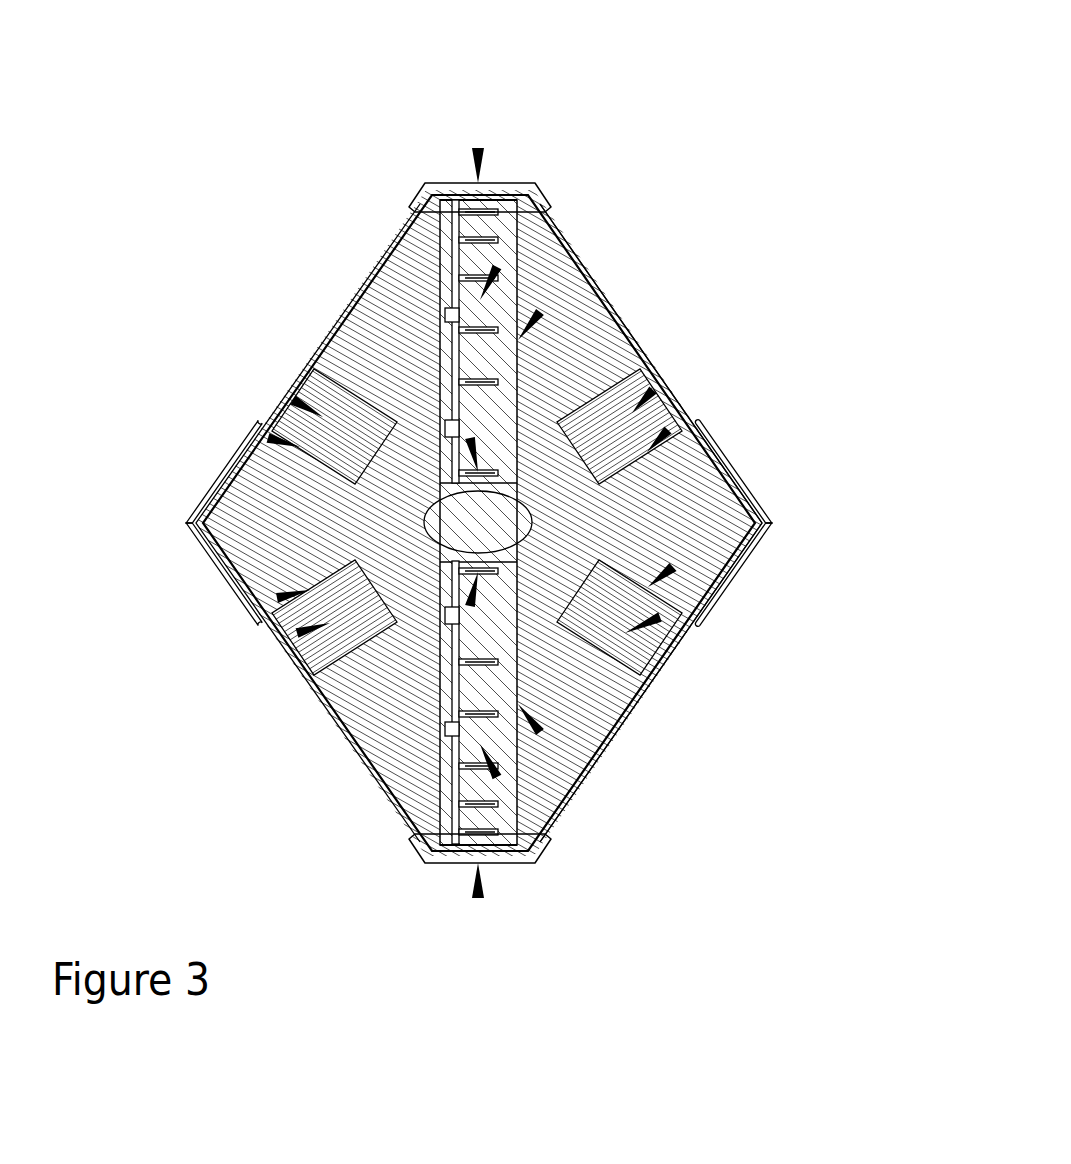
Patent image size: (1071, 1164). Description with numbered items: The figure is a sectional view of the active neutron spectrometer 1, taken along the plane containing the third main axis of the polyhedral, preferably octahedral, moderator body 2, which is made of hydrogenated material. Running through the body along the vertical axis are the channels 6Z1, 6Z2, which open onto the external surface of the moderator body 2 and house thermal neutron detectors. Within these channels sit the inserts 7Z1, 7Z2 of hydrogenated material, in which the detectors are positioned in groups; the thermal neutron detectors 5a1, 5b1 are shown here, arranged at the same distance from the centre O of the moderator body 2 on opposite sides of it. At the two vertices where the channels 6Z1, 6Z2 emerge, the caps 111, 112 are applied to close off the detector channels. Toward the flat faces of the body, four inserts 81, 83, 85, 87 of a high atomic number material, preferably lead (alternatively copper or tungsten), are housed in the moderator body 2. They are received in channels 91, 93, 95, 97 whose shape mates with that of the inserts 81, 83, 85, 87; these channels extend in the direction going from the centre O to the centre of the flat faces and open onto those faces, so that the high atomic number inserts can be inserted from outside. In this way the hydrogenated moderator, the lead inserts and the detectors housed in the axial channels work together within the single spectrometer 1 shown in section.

The active neutron spectrometer 1 is at (772, 768).
The moderator body 2 is at (612, 305).
The thermal neutron detector 5a1 is at (440, 370).
The thermal neutron detector 5b1 is at (440, 675).
The channel 6Z1 is at (580, 265).
The channel 6Z2 is at (588, 778).
The insert of hydrogenated material 7Z1 is at (540, 197).
The insert of hydrogenated material 7Z2 is at (540, 850).
The insert of high atomic number material 81 is at (700, 605).
The insert of high atomic number material 83 is at (645, 400).
The insert of high atomic number material 85 is at (295, 398).
The insert of high atomic number material 87 is at (290, 640).
The channel 91 is at (755, 500).
The channel 93 is at (697, 430).
The channel 95 is at (258, 430).
The channel 97 is at (258, 616).
The cap 111 is at (478, 898).
The cap 112 is at (478, 148).